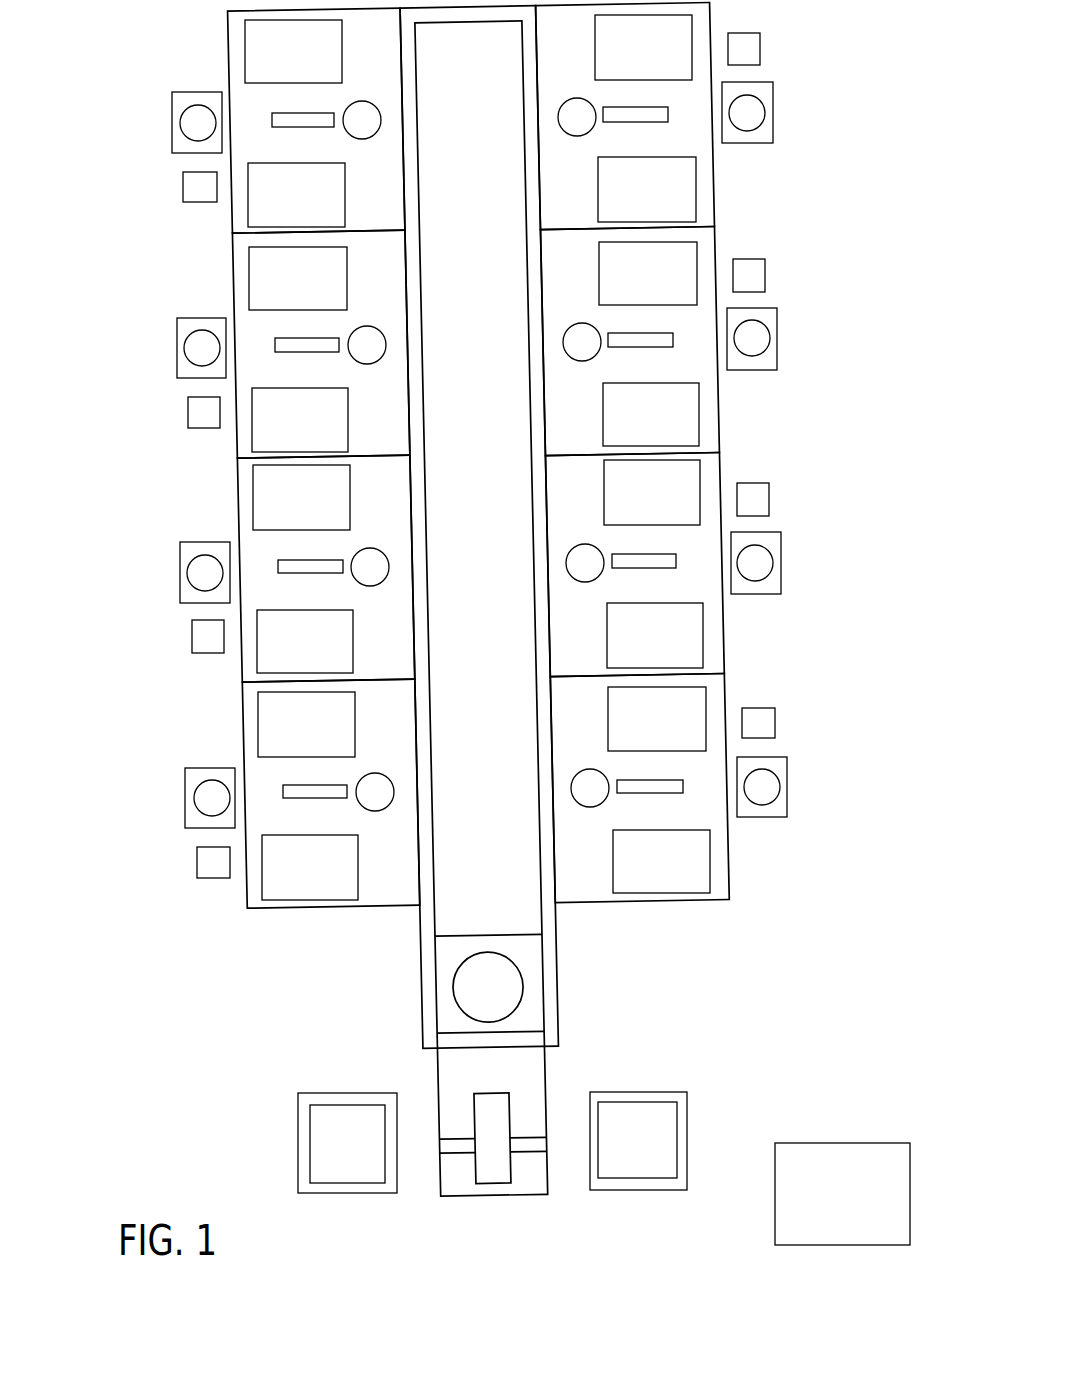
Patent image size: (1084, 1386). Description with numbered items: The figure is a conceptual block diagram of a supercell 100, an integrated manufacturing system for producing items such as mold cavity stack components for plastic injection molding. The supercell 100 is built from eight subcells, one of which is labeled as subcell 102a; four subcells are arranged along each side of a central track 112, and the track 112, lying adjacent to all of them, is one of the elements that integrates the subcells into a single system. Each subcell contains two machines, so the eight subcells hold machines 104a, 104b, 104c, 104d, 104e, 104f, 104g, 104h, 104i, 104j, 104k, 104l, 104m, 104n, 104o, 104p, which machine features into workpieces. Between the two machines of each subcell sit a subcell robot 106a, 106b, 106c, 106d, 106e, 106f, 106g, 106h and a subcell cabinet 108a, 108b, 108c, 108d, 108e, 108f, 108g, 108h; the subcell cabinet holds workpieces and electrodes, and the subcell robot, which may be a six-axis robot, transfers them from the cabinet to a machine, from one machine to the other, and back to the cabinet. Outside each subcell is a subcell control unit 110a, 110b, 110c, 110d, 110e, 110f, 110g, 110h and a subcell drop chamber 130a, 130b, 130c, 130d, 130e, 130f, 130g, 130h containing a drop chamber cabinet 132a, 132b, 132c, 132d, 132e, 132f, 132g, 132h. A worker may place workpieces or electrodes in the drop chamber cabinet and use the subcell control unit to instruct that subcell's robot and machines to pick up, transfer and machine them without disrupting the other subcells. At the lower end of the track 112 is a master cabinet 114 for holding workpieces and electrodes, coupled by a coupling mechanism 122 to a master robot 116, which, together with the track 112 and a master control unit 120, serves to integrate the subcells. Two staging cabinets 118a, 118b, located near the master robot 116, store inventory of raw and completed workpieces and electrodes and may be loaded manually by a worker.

The supercell 100 is at (767, 962).
The subcell 102a is at (125, 722).
The machine 104a is at (286, 877).
The machine 104b is at (283, 734).
The machine 104c is at (281, 652).
The machine 104d is at (278, 509).
The machine 104e is at (276, 432).
The machine 104f is at (273, 287).
The machine 104g is at (275, 207).
The machine 104h is at (271, 64).
The machine 104i is at (622, 57).
The machine 104j is at (624, 199).
The machine 104k is at (628, 284).
The machine 104l is at (632, 424).
The machine 104m is at (631, 502).
The machine 104n is at (635, 645).
The machine 104o is at (638, 728).
The machine 104p is at (641, 872).
The subcell robot 106a is at (323, 798).
The subcell robot 106b is at (318, 573).
The subcell robot 106c is at (315, 352).
The subcell robot 106d is at (312, 127).
The subcell robot 106e is at (631, 122).
The subcell robot 106f is at (635, 347).
The subcell robot 106g is at (639, 568).
The subcell robot 106h is at (645, 793).
The subcell cabinet 108a is at (376, 773).
The subcell cabinet 108b is at (371, 548).
The subcell cabinet 108c is at (368, 326).
The subcell cabinet 108d is at (363, 101).
The subcell cabinet 108e is at (576, 98).
The subcell cabinet 108f is at (581, 323).
The subcell cabinet 108g is at (584, 544).
The subcell cabinet 108h is at (589, 769).
The subcell control unit 110a is at (202, 862).
The subcell control unit 110b is at (197, 636).
The subcell control unit 110c is at (193, 411).
The subcell control unit 110d is at (187, 186).
The subcell control unit 110e is at (755, 49).
The subcell control unit 110f is at (760, 275).
The subcell control unit 110g is at (764, 499).
The subcell control unit 110h is at (769, 722).
The track 112 is at (536, 916).
The master cabinet 114 is at (512, 985).
The master robot 116 is at (478, 1184).
The staging cabinet 118a is at (325, 1159).
The staging cabinet 118b is at (613, 1154).
The master control unit 120 is at (826, 1210).
The coupling mechanism 122 is at (532, 1049).
The subcell drop chamber 130a is at (185, 770).
The subcell drop chamber 130b is at (180, 543).
The subcell drop chamber 130c is at (177, 318).
The subcell drop chamber 130d is at (172, 93).
The subcell drop chamber 130e is at (770, 83).
The subcell drop chamber 130f is at (775, 309).
The subcell drop chamber 130g is at (779, 533).
The subcell drop chamber 130h is at (785, 758).
The drop chamber cabinet 132a is at (200, 799).
The drop chamber cabinet 132b is at (194, 574).
The drop chamber cabinet 132c is at (191, 349).
The drop chamber cabinet 132d is at (187, 124).
The drop chamber cabinet 132e is at (757, 114).
The drop chamber cabinet 132f is at (762, 339).
The drop chamber cabinet 132g is at (765, 564).
The drop chamber cabinet 132h is at (772, 788).